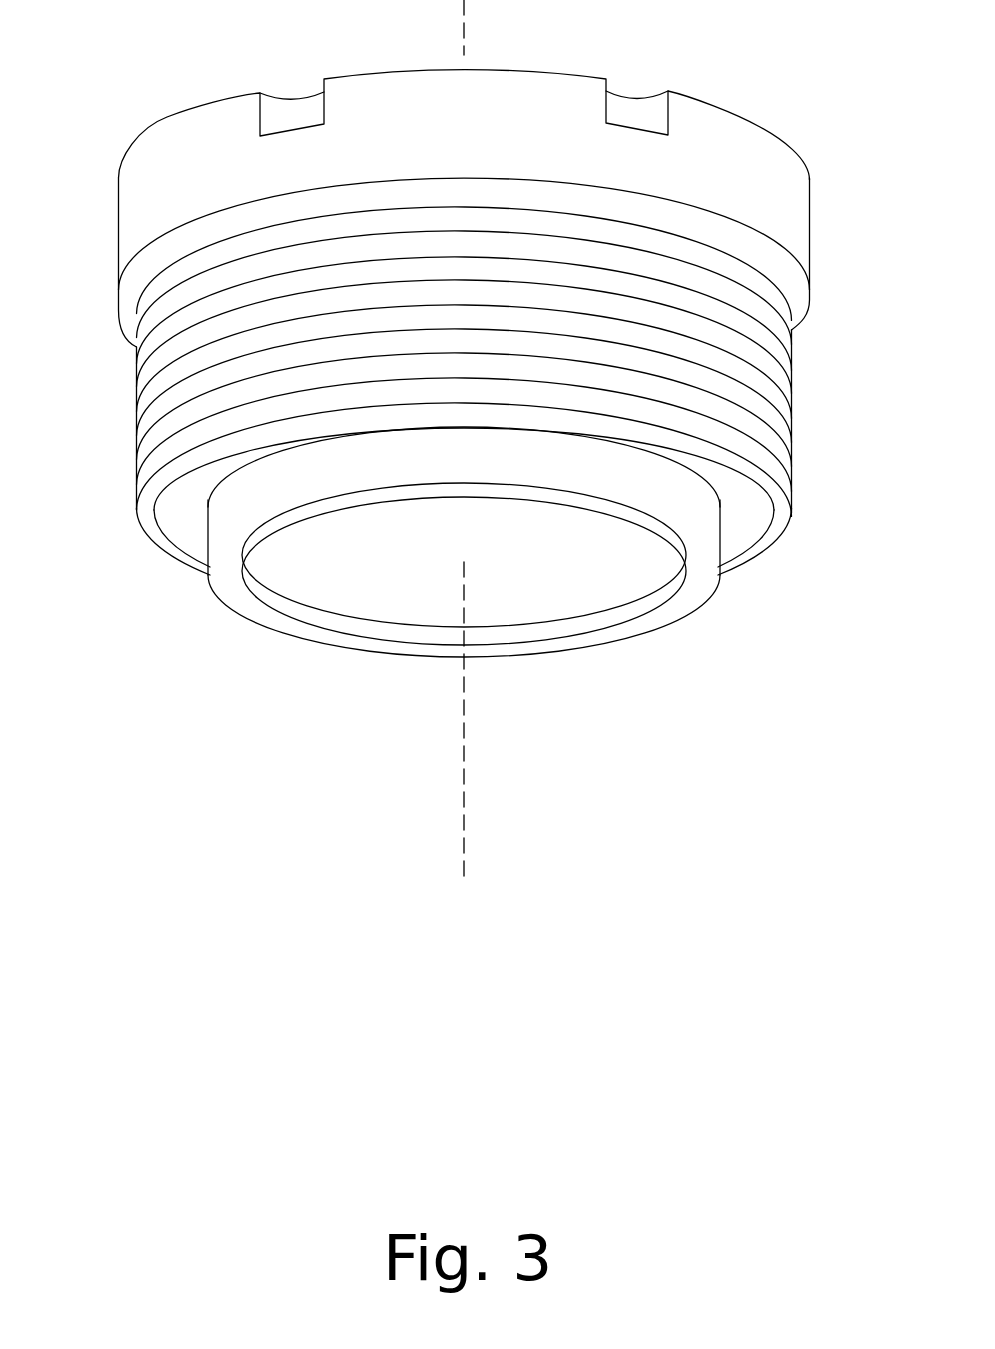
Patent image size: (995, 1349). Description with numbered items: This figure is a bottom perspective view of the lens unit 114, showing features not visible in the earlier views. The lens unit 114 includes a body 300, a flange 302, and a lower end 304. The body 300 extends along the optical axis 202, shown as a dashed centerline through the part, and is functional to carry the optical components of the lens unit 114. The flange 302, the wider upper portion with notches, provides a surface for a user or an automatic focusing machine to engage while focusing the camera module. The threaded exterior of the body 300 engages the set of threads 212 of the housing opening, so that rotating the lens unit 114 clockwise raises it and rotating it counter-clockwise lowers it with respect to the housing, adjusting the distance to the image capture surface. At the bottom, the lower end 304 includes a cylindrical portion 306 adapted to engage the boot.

The lens unit 114 is at (66, 118).
The flange 302 is at (773, 197).
The body 300 is at (120, 324).
The set of threads 212 is at (753, 353).
The lower end 304 is at (728, 496).
The cylindrical portion 306 is at (226, 524).
The optical axis 202 is at (464, 785).